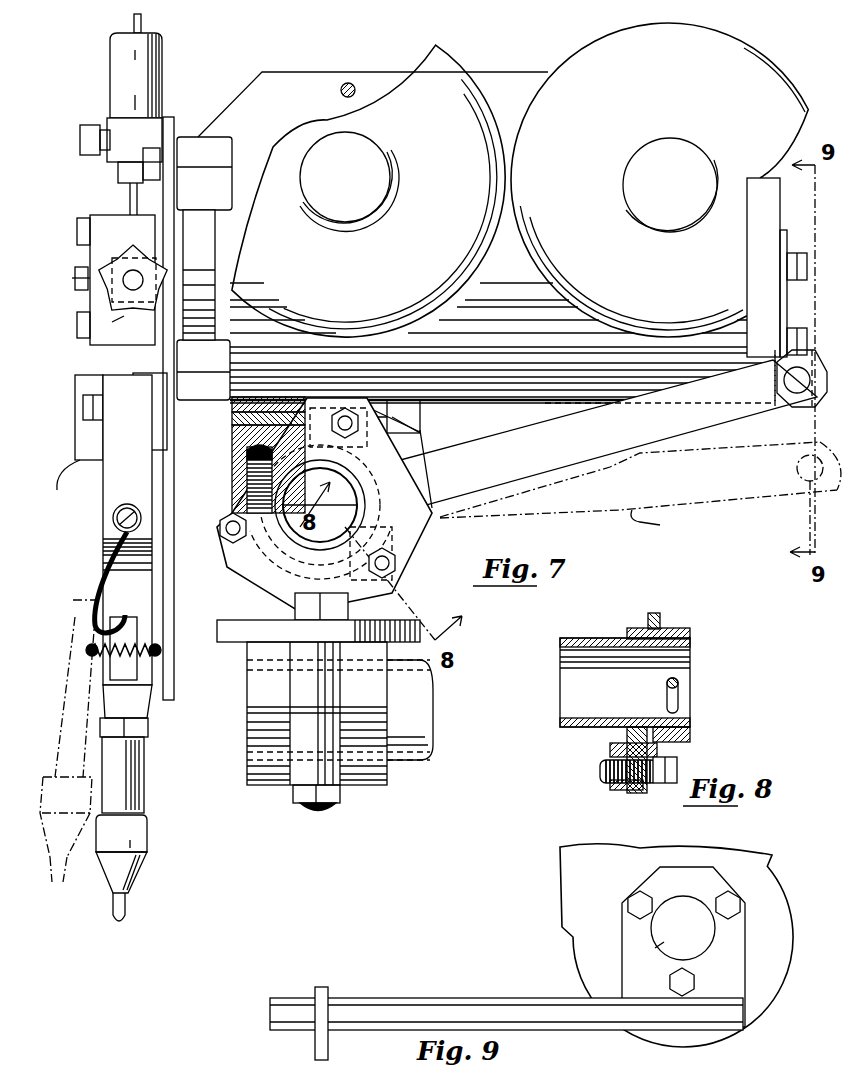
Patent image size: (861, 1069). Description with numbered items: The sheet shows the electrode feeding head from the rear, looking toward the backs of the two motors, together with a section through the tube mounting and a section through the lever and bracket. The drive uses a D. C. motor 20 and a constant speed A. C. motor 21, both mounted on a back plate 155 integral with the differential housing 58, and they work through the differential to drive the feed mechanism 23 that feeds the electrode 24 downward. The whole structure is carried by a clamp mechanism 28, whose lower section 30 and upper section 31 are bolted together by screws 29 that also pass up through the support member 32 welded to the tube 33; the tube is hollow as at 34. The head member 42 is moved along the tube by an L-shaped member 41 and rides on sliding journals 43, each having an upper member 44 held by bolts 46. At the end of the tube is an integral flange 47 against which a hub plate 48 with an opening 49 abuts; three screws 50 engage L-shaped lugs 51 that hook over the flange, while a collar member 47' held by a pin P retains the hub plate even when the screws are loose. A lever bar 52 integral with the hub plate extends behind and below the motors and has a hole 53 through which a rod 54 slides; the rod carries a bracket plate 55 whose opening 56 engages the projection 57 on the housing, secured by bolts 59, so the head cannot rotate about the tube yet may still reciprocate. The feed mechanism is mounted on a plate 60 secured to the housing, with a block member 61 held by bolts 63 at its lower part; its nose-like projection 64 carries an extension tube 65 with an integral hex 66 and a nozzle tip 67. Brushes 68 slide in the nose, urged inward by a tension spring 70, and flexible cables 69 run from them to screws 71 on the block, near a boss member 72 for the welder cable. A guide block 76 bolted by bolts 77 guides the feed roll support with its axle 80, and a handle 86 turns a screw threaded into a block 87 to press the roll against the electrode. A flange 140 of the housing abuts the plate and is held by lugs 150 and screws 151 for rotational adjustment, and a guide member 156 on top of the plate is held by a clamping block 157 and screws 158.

In FIG. 7, the motor 20 is at (442, 80).
In FIG. 7, the motor 21 is at (760, 80).
In FIG. 7, the feed mechanism 23 is at (146, 241).
In FIG. 7, the electrode 24 is at (142, 22).
In FIG. 7, the clamp mechanism 28 is at (440, 792).
In FIG. 7, the screws 29 is at (320, 815).
In FIG. 7, the lower section 30 is at (252, 747).
In FIG. 7, the upper section 31 is at (250, 696).
In FIG. 7, the support member 32 is at (250, 604).
In FIG. 7, the tube 33 is at (405, 538).
In FIG. 8, the tube 33 is at (575, 638).
In FIG. 8, the hollow 34 is at (572, 700).
In FIG. 7, the L-shaped member 41 is at (420, 425).
In FIG. 7, the head member 42 is at (232, 415).
In FIG. 7, the sliding journals 43 is at (235, 430).
In FIG. 7, the upper member 44 is at (240, 514).
In FIG. 7, the bolts 46 is at (246, 492).
In FIG. 8, the flange 47 is at (602, 760).
In FIG. 8, the collar member 47' is at (693, 644).
In FIG. 7, the hub plate 48 is at (447, 582).
In FIG. 8, the hub plate 48 is at (658, 616).
In FIG. 7, the opening 49 is at (415, 470).
In FIG. 8, the opening 49 is at (692, 722).
In FIG. 7, the screws 50 is at (226, 530).
In FIG. 8, the screws 50 is at (680, 770).
In FIG. 7, the L-shaped lugs 51 is at (222, 568).
In FIG. 8, the L-shaped lugs 51 is at (606, 790).
In FIG. 7, the lever bar 52 is at (555, 462).
In FIG. 9, the lever bar 52 is at (314, 992).
In FIG. 7, the hole 53 is at (800, 376).
In FIG. 7, the rod 54 is at (797, 395).
In FIG. 9, the rod 54 is at (408, 1004).
In FIG. 7, the bracket plate 55 is at (787, 316).
In FIG. 9, the bracket plate 55 is at (630, 935).
In FIG. 9, the opening 56 is at (660, 948).
In FIG. 9, the projection 57 is at (686, 904).
In FIG. 7, the differential housing 58 is at (462, 399).
In FIG. 9, the differential housing 58 is at (770, 862).
In FIG. 7, the bolts 59 is at (800, 253).
In FIG. 9, the bolts 59 is at (632, 897).
In FIG. 7, the plate 60 is at (170, 120).
In FIG. 7, the block member 61 is at (143, 584).
In FIG. 7, the bolts 63 is at (92, 425).
In FIG. 7, the nose-like projection 64 is at (147, 700).
In FIG. 7, the extension tube 65 is at (145, 789).
In FIG. 7, the hex 66 is at (148, 730).
In FIG. 7, the nozzle tip 67 is at (147, 835).
In FIG. 7, the brushes 68 is at (137, 630).
In FIG. 7, the flexible cables 69 is at (90, 603).
In FIG. 7, the tension spring 70 is at (162, 652).
In FIG. 7, the screws 71 is at (142, 520).
In FIG. 7, the boss member 72 is at (68, 491).
In FIG. 7, the guide block 76 is at (95, 216).
In FIG. 7, the bolts 77 is at (77, 228).
In FIG. 7, the axle 80 is at (80, 285).
In FIG. 7, the handle 86 is at (125, 330).
In FIG. 7, the block 87 is at (199, 275).
In FIG. 7, the flange 140 is at (168, 430).
In FIG. 7, the lugs 150 is at (212, 137).
In FIG. 7, the screws 151 is at (160, 150).
In FIG. 7, the back plate 155 is at (300, 78).
In FIG. 7, the guide member 156 is at (163, 70).
In FIG. 7, the clamping block 157 is at (120, 115).
In FIG. 7, the screws 158 is at (80, 135).
In FIG. 7, the pin P is at (332, 512).
In FIG. 8, the pin P is at (680, 700).